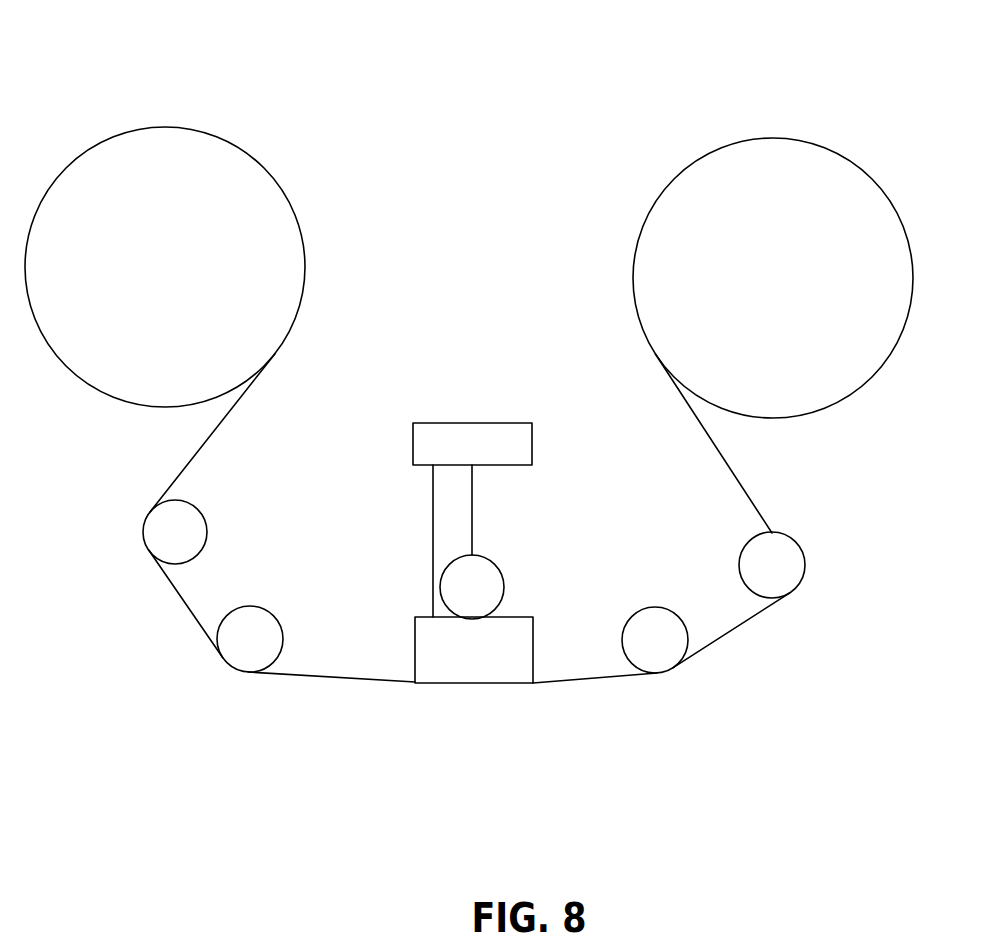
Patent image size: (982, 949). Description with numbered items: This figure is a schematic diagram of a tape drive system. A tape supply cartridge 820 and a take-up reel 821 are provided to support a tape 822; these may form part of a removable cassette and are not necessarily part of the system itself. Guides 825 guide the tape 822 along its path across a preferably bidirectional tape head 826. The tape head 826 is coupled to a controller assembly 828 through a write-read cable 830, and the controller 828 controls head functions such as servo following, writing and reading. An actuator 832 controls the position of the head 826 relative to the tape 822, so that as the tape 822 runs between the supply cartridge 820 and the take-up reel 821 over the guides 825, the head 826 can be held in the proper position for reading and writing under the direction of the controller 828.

The tape supply cartridge 820 is at (163, 126).
The take-up reel 821 is at (771, 138).
The tape 822 is at (335, 680).
The guides 825 is at (207, 523).
The tape head 826 is at (533, 647).
The controller assembly 828 is at (470, 423).
The write-read cable 830 is at (433, 583).
The actuator 832 is at (493, 565).